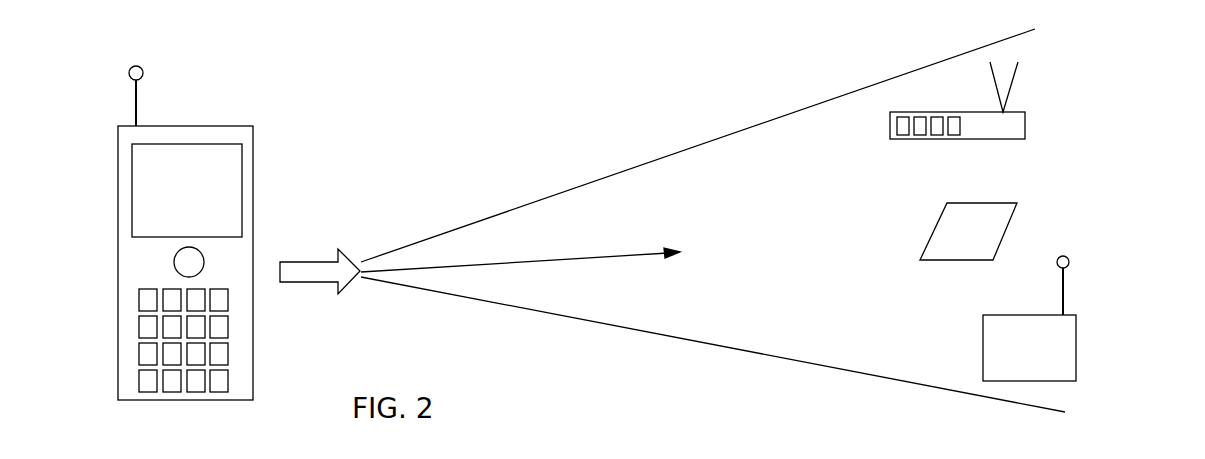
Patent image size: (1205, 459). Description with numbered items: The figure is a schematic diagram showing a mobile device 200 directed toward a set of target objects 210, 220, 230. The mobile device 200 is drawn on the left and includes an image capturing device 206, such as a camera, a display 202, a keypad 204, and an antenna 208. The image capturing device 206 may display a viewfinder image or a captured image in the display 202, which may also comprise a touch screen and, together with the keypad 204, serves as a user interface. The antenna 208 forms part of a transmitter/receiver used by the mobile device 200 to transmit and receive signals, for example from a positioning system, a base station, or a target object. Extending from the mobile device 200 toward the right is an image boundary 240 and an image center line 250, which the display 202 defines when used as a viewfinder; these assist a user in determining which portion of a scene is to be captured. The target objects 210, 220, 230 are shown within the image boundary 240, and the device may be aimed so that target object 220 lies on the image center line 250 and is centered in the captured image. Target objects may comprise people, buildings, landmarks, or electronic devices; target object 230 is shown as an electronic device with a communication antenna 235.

The mobile device 200 is at (253, 148).
The display 202 is at (242, 193).
The keypad 204 is at (218, 385).
The image capturing device 206 is at (204, 262).
The antenna 208 is at (140, 86).
The target object 210 is at (1025, 122).
The target object 220 is at (1013, 223).
The target object 230 is at (1076, 333).
The communication antenna 235 is at (1068, 280).
The image boundary 240 is at (625, 170).
The image center line 250 is at (482, 263).